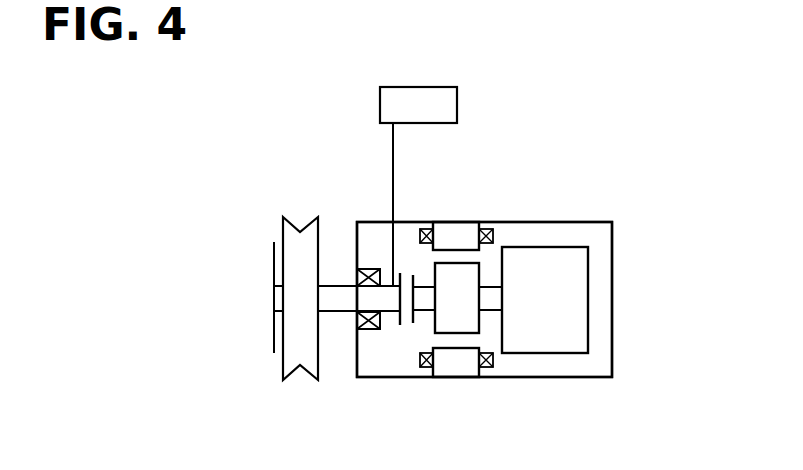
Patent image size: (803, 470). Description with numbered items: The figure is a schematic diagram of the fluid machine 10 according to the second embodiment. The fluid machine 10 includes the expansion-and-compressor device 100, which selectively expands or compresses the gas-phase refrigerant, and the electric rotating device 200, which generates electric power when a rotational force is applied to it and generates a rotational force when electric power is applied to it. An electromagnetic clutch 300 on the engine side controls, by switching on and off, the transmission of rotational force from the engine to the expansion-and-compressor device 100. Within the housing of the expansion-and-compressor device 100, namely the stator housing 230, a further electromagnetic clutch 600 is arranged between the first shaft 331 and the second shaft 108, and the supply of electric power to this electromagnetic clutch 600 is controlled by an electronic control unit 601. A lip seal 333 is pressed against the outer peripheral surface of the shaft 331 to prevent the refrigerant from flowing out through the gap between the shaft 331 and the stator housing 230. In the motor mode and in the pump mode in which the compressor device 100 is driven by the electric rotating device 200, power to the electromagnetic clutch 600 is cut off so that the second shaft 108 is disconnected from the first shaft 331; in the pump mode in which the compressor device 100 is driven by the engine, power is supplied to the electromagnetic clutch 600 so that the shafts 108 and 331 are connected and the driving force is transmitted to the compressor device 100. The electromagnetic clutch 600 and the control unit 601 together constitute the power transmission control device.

The fluid machine 10 is at (616, 261).
The expansion-and-compressor device 100 is at (555, 262).
The second shaft 108 is at (428, 289).
The electric rotating device 200 is at (457, 277).
The stator housing 230 is at (360, 222).
The electromagnetic clutch 300 is at (272, 231).
The first shaft 331 is at (337, 290).
The lip seal 333 is at (368, 331).
The electromagnetic clutch 600 is at (410, 335).
The electronic control unit 601 is at (457, 100).